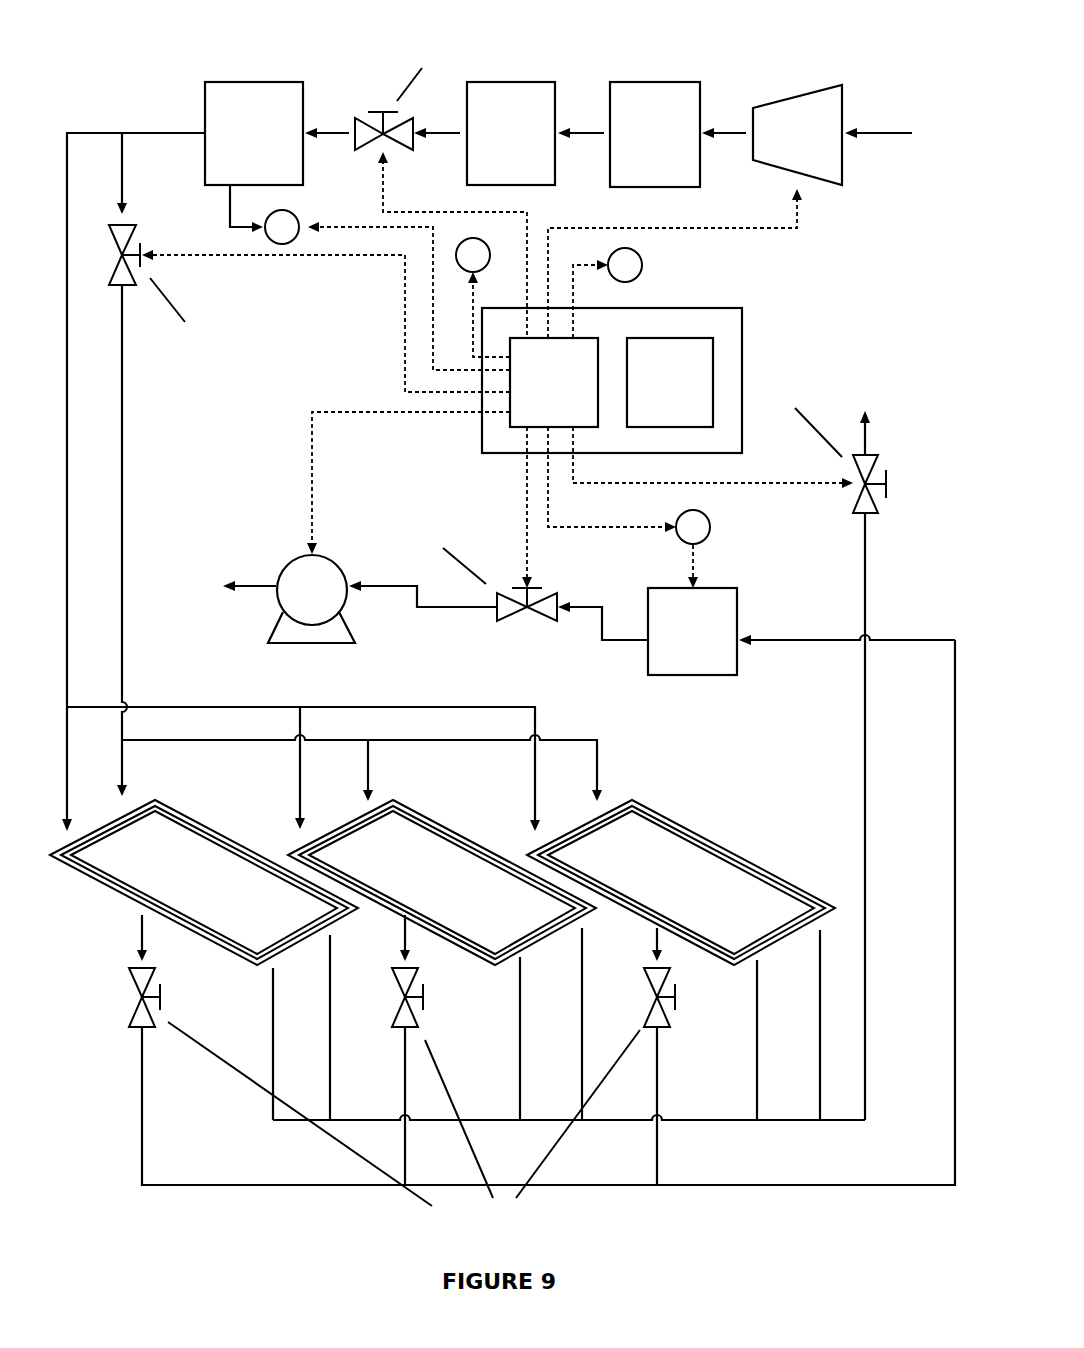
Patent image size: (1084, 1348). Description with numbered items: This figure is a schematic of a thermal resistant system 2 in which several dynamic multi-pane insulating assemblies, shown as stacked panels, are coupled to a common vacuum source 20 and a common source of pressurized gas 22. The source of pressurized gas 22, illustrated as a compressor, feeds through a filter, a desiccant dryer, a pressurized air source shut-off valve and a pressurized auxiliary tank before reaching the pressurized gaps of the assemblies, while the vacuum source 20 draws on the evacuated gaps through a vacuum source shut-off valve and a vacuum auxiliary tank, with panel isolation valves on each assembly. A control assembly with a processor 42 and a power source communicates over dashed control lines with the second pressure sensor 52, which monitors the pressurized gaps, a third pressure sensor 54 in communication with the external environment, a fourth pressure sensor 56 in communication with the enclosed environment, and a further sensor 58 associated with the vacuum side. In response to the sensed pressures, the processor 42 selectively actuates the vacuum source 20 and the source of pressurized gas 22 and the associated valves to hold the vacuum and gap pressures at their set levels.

The thermal resistant system 2 is at (828, 266).
The source of pressurized gas 22 is at (797, 135).
The processor 42 is at (554, 382).
The second pressure sensor 52 is at (282, 227).
The third pressure sensor 54 is at (625, 265).
The fourth pressure sensor 56 is at (473, 255).
The vacuum sensor 58 is at (693, 527).
The vacuum source 20 is at (311, 599).